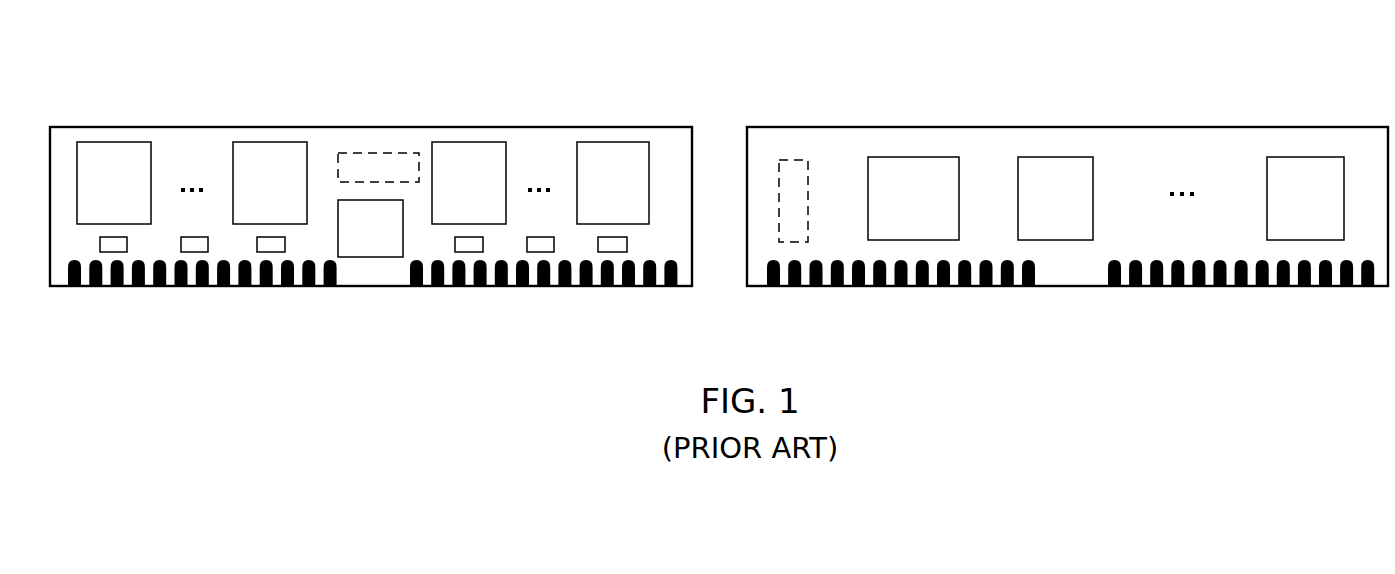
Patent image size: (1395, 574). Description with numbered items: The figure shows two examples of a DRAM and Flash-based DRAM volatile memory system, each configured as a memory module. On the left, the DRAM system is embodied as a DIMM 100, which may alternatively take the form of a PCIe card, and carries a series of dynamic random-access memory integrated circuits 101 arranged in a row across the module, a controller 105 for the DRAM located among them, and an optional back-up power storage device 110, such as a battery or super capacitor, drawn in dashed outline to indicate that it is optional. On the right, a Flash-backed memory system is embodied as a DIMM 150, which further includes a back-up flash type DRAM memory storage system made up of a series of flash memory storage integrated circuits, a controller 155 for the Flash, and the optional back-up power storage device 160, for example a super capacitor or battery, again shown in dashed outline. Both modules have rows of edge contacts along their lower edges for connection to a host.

The DIMM 100 is at (333, 127).
The dynamic random-access memory integrated circuits 101 is at (618, 153).
The controller for the DRAM 105 is at (373, 250).
The back-up power storage device 110 is at (402, 162).
The DIMM 150 is at (985, 127).
The controller for the Flash 155 is at (910, 162).
The back-up power storage device 160 is at (788, 160).